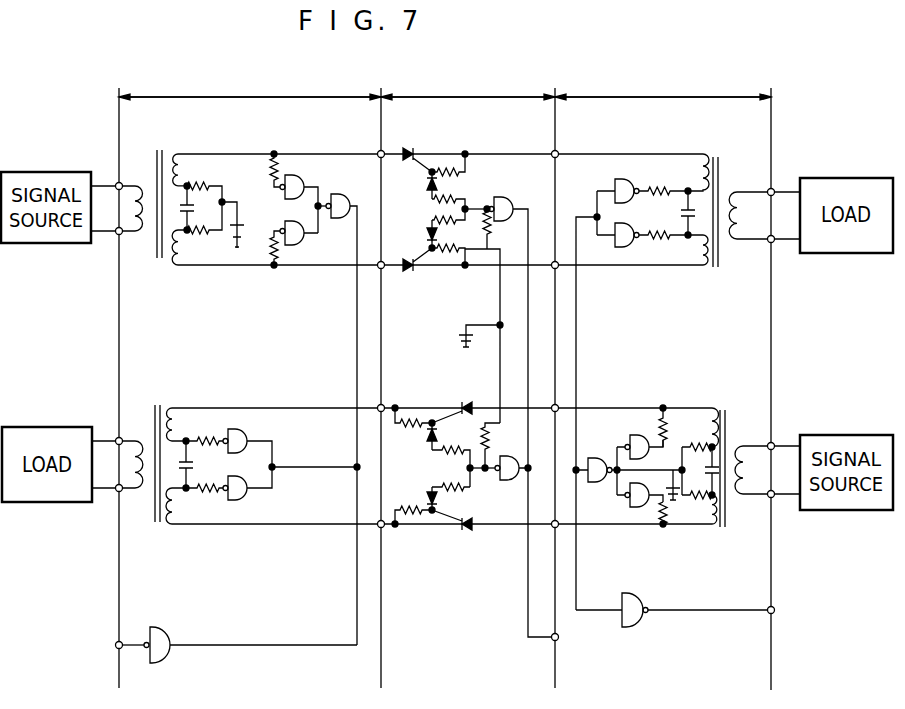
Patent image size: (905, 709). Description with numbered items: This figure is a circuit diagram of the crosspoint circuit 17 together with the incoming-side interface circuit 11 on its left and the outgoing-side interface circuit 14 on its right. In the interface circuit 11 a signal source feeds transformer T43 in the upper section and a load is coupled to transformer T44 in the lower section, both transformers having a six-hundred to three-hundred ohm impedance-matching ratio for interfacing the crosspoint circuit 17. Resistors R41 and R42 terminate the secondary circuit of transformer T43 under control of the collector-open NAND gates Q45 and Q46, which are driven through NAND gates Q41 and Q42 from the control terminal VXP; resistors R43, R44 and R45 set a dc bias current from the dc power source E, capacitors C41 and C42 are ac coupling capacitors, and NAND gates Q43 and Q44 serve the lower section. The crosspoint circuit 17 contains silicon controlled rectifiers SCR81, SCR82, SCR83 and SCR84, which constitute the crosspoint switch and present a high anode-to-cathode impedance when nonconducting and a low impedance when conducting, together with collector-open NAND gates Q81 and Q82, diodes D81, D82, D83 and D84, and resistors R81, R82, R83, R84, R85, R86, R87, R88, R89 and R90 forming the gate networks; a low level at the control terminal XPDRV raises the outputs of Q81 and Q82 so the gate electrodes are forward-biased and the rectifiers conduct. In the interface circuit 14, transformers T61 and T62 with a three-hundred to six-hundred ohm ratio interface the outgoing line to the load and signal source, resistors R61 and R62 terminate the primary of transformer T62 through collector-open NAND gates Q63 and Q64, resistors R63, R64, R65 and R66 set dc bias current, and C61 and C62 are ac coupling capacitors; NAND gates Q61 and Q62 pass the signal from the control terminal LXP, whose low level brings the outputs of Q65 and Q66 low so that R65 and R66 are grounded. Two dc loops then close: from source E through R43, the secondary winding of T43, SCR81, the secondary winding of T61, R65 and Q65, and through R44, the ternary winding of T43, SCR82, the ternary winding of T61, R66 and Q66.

The interface circuit 11 is at (228, 97).
The crosspoint circuit 17 is at (432, 97).
The interface circuit 14 is at (604, 98).
The transformer T43 is at (152, 191).
The transformer T44 is at (151, 450).
The transformer T61 is at (731, 196).
The transformer T62 is at (743, 455).
The resistor R41 is at (273, 160).
The resistor R42 is at (273, 258).
The resistor R43 is at (198, 183).
The resistor R44 is at (205, 362).
The resistor R45 is at (203, 430).
The ac coupling capacitor C41 is at (200, 210).
The ac coupling capacitor C42 is at (204, 464).
The ac coupling capacitor C61 is at (668, 213).
The ac coupling capacitor C62 is at (716, 493).
The dc power source E is at (457, 364).
The NAND gate Q41 is at (160, 628).
The NAND gate Q42 is at (341, 194).
The collector-open type NAND gate Q43 is at (240, 430).
The collector-open type NAND gate Q44 is at (244, 498).
The collector-open type NAND gate Q45 is at (301, 176).
The collector-open type NAND gate Q46 is at (302, 244).
The NAND gate Q61 is at (622, 599).
The NAND gate Q62 is at (629, 459).
The collector-open type NAND gate Q63 is at (633, 436).
The collector-open type NAND gate Q64 is at (652, 478).
The collector-open type NAND gate Q65 is at (618, 181).
The collector-open type NAND gate Q66 is at (620, 247).
The collector-open type NAND gate Q81 is at (502, 197).
The collector-open type NAND gate Q82 is at (507, 481).
The silicon controlled rectifier SCR81 is at (436, 139).
The silicon controlled rectifier SCR82 is at (422, 281).
The silicon controlled rectifier SCR83 is at (443, 393).
The silicon controlled rectifier SCR84 is at (471, 544).
The diode D81 is at (412, 187).
The diode D82 is at (459, 234).
The diode D83 is at (417, 440).
The diode D84 is at (417, 494).
The resistor R81 is at (446, 177).
The resistor R82 is at (450, 256).
The resistor R83 is at (426, 210).
The resistor R84 is at (426, 230).
The resistor R85 is at (408, 421).
The resistor R86 is at (413, 512).
The resistor R87 is at (454, 454).
The resistor R88 is at (452, 488).
The resistor R89 is at (505, 229).
The resistor R90 is at (504, 445).
The resistor R61 is at (657, 422).
The resistor R62 is at (660, 517).
The resistor R63 is at (693, 436).
The resistor R64 is at (702, 500).
The resistor R65 is at (663, 181).
The resistor R66 is at (663, 250).
The control terminal VXP is at (100, 655).
The control terminal XPDRV is at (656, 655).
The control terminal LXP is at (839, 624).